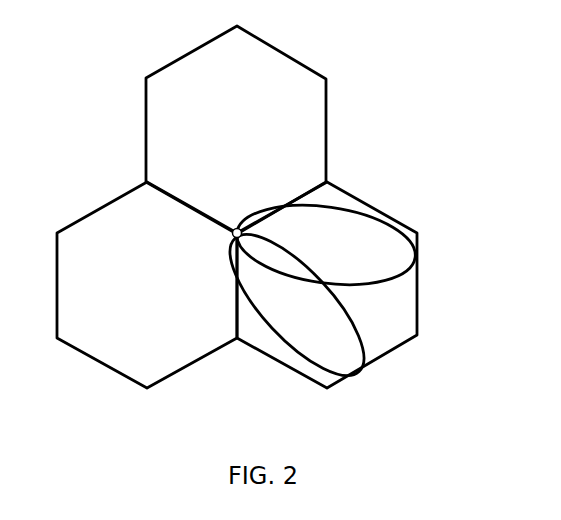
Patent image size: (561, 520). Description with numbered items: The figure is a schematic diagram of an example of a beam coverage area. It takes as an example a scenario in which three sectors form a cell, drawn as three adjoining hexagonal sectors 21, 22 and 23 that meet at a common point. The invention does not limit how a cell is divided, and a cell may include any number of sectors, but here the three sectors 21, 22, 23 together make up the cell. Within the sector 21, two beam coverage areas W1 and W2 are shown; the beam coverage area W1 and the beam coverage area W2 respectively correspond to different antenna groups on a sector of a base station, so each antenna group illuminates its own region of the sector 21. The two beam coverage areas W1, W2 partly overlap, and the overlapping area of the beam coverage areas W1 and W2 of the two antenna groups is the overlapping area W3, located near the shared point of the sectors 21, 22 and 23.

The sector 21 is at (327, 285).
The sector 22 is at (147, 285).
The sector 23 is at (236, 130).
The beam coverage area W1 is at (350, 237).
The beam coverage area W2 is at (322, 348).
The overlapping area W3 is at (275, 256).